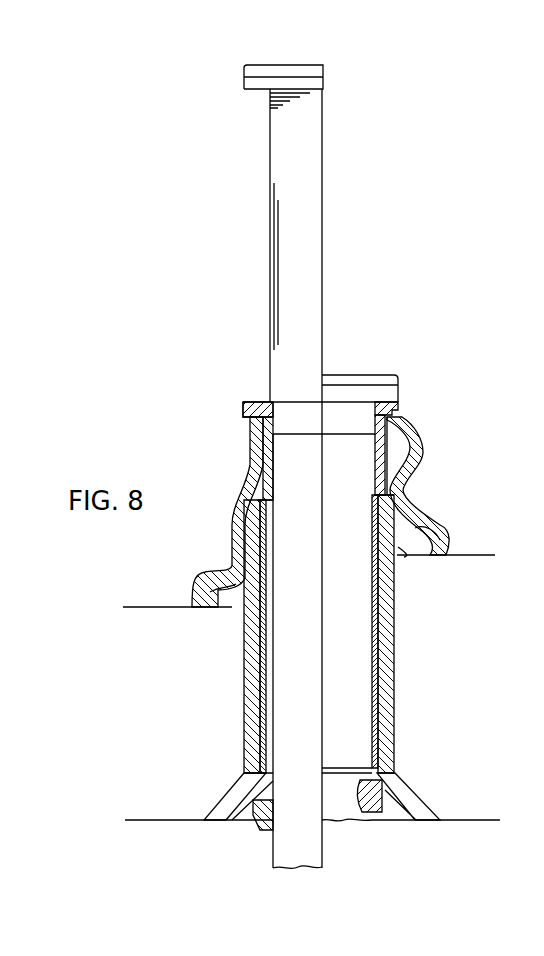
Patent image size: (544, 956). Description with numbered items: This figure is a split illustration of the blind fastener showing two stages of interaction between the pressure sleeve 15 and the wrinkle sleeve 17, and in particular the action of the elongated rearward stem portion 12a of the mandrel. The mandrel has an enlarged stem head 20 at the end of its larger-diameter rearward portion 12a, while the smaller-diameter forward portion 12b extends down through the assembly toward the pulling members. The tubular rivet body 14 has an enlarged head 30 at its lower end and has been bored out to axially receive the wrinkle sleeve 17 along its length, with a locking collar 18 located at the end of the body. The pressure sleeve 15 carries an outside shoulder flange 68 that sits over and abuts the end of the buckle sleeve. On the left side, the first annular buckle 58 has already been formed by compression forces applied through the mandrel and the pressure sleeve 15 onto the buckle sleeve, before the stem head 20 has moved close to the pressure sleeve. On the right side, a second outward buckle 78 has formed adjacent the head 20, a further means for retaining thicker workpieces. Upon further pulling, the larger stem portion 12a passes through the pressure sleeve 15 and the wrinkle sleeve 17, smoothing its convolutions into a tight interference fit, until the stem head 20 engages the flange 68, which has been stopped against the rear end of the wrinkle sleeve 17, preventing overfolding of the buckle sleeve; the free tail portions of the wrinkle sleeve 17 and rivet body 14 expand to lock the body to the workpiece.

The first rearward end portion 12a is at (284, 186).
The second forward end portion 12b is at (296, 740).
The rivet body 14 is at (246, 720).
The pressure sleeve 15 is at (255, 482).
The wrinkle sleeve 17 is at (268, 670).
The locking collar 18 is at (262, 830).
The stem head 20 is at (265, 68).
The enlarged head 30 is at (405, 790).
The buckle 58 is at (200, 597).
The shoulder flange 68 is at (262, 409).
The second buckle 78 is at (425, 470).